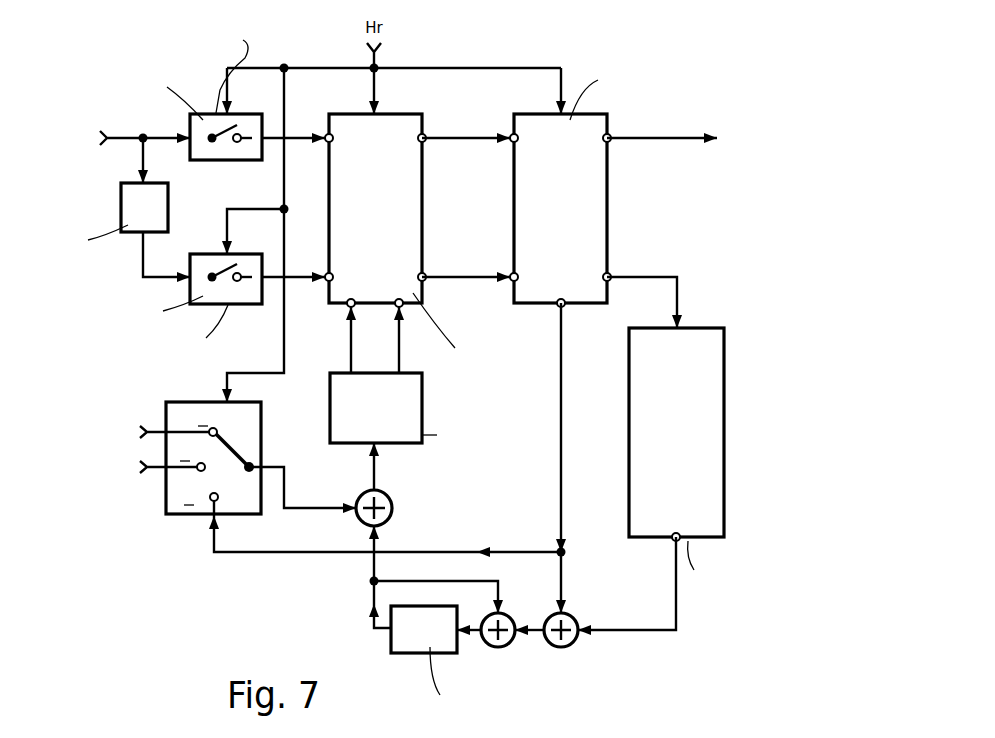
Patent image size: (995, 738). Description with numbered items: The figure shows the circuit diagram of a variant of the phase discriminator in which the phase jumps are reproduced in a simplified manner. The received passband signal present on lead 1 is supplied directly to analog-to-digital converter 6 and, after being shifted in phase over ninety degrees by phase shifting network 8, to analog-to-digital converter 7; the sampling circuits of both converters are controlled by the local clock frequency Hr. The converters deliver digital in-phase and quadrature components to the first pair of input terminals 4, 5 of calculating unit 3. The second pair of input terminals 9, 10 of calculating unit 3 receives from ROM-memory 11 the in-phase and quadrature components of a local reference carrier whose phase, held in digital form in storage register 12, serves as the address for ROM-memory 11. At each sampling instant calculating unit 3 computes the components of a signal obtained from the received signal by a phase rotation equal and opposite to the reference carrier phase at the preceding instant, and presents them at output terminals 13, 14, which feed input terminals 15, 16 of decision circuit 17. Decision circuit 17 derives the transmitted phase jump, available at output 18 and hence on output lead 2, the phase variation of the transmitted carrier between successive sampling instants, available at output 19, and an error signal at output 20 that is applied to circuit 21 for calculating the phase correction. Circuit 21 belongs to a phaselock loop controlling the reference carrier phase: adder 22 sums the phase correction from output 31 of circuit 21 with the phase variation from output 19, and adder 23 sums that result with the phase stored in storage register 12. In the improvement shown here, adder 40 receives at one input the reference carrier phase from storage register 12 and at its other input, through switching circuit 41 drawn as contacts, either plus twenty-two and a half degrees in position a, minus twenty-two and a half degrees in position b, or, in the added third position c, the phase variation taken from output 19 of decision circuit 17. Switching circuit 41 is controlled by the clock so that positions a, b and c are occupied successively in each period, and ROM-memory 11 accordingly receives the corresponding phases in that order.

The lead 1 is at (127, 136).
The output lead 2 is at (681, 136).
The calculating unit 3 is at (327, 205).
The input terminal 4 is at (326, 135).
The input terminal 5 is at (326, 274).
The analog-to-digital converter 6 is at (211, 113).
The analog-to-digital converter 7 is at (206, 253).
The phase shifting network 8 is at (169, 205).
The input terminal 9 is at (348, 306).
The input terminal 10 is at (402, 307).
The ROM-memory 11 is at (423, 412).
The storage register 12 is at (413, 655).
The output terminal 13 is at (425, 135).
The output terminal 14 is at (424, 281).
The input terminal 15 is at (512, 142).
The input terminal 16 is at (512, 275).
The decision circuit 17 is at (609, 205).
The output 18 is at (610, 136).
The output 19 is at (559, 307).
The output 20 is at (609, 275).
The circuit for calculating the phase correction 21 is at (695, 326).
The adder 22 is at (561, 648).
The adder 23 is at (501, 648).
The output 31 is at (671, 542).
The adder 40 is at (390, 498).
The switching circuit 41 is at (176, 400).